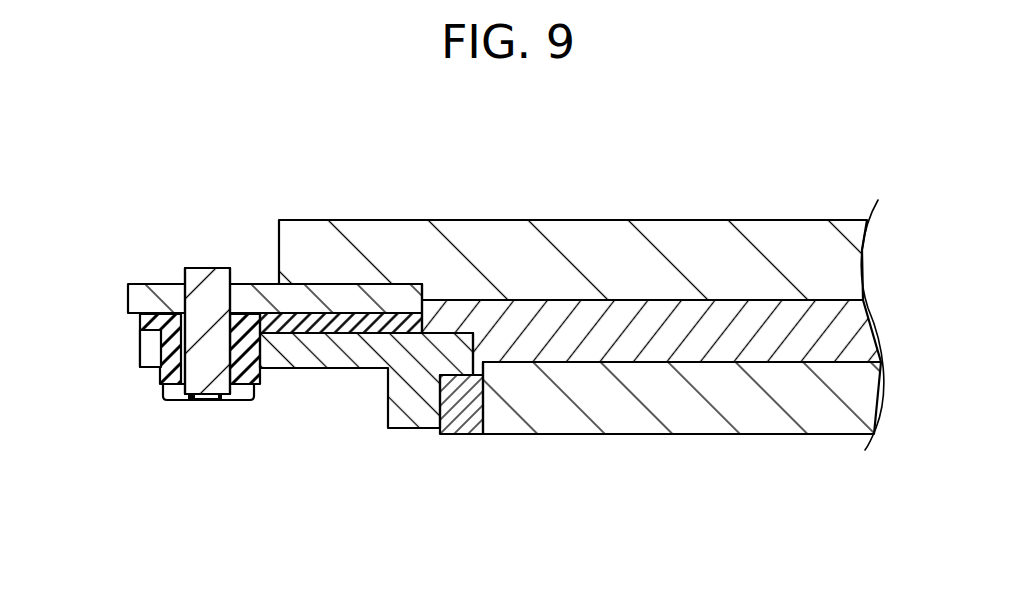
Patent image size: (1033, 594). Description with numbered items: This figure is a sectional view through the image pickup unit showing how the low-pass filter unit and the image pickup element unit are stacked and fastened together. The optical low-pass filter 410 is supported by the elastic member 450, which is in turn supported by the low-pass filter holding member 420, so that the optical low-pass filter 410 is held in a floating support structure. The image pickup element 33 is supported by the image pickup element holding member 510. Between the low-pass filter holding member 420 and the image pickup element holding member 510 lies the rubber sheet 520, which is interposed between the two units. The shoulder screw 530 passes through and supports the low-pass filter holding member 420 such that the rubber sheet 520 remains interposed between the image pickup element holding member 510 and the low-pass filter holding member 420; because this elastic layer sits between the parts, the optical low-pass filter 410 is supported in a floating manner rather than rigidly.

The image pickup element 33 is at (677, 252).
The optical low-pass filter 410 is at (777, 417).
The low-pass filter holding member 420 is at (152, 349).
The elastic member 450 is at (461, 413).
The image pickup element holding member 510 is at (333, 297).
The rubber sheet 520 is at (203, 329).
The shoulder screw 530 is at (190, 377).